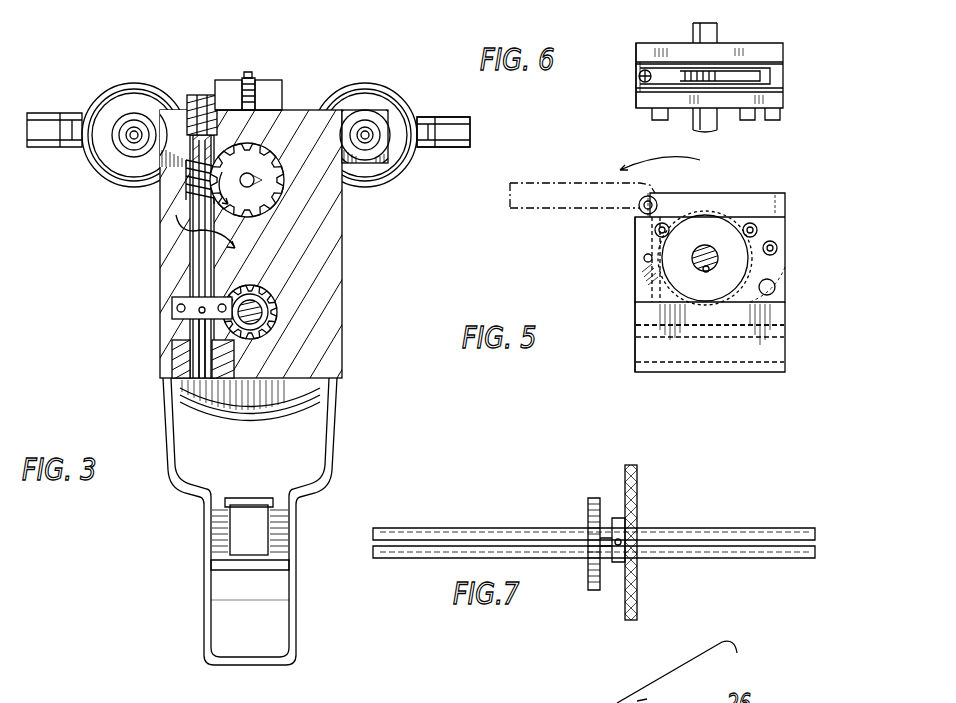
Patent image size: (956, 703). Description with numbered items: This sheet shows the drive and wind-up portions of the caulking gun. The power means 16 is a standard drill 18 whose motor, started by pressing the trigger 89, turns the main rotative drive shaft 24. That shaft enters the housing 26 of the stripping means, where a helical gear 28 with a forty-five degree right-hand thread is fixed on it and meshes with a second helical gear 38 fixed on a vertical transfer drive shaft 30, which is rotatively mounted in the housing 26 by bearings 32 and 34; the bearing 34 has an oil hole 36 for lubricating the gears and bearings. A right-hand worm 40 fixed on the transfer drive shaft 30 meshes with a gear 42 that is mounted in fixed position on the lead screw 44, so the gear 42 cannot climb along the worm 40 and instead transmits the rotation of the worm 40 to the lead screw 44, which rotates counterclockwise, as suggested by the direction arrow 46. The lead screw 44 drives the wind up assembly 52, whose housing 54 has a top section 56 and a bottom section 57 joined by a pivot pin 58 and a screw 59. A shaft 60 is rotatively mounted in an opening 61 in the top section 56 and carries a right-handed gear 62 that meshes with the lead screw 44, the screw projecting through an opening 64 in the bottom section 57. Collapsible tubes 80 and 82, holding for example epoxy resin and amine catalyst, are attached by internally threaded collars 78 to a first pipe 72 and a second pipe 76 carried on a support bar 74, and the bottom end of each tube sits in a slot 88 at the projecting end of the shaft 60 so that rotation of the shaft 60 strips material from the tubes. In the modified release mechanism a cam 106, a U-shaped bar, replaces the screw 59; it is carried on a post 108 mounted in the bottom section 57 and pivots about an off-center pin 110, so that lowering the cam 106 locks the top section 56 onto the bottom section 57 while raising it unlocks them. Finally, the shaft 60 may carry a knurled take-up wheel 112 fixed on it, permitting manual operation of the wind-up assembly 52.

In FIG. 3, the power means 16 is at (167, 563).
In FIG. 3, the drill 18 is at (338, 436).
In FIG. 3, the main rotative drive shaft 24 is at (265, 318).
In FIG. 3, the housing 26 is at (343, 231).
In FIG. 3, the helical gear 28 is at (270, 299).
In FIG. 3, the transfer drive shaft 30 is at (200, 333).
In FIG. 3, the bearing 32 is at (190, 361).
In FIG. 3, the bearing 34 is at (193, 104).
In FIG. 3, the oil hole 36 is at (198, 95).
In FIG. 3, the second helical gear 38 is at (172, 306).
In FIG. 3, the worm 40 is at (190, 187).
In FIG. 3, the gear 42 is at (269, 170).
In FIG. 3, the lead screw 44 is at (270, 194).
In FIG. 3, the direction arrow 46 is at (264, 207).
In FIG. 3, the wind up assembly 52 is at (285, 68).
In FIG. 3, the housing 54 is at (231, 72).
In FIG. 6, the housing 54 is at (623, 36).
In FIG. 5, the housing 54 is at (624, 304).
In FIG. 3, the top section 56 is at (272, 87).
In FIG. 6, the top section 56 is at (784, 103).
In FIG. 5, the top section 56 is at (783, 250).
In FIG. 5, the bottom section 57 is at (782, 363).
In FIG. 5, the pivot pin 58 is at (776, 289).
In FIG. 3, the screw 59 is at (258, 78).
In FIG. 3, the shaft 60 is at (456, 118).
In FIG. 6, the shaft 60 is at (717, 38).
In FIG. 5, the shaft 60 is at (696, 255).
In FIG. 7, the shaft 60 is at (686, 528).
In FIG. 5, the opening 61 is at (705, 273).
In FIG. 6, the gear 62 is at (780, 76).
In FIG. 5, the gear 62 is at (707, 214).
In FIG. 7, the gear 62 is at (592, 498).
In FIG. 5, the opening 64 is at (636, 326).
In FIG. 3, the first pipe 72 is at (373, 141).
In FIG. 3, the support bar 74 is at (395, 152).
In FIG. 3, the second pipe 76 is at (128, 148).
In FIG. 3, the collar 78 is at (138, 88).
In FIG. 3, the collapsible tube 80 is at (378, 85).
In FIG. 3, the collapsible tube 82 is at (124, 86).
In FIG. 3, the slot 88 is at (52, 141).
In FIG. 7, the slot 88 is at (496, 528).
In FIG. 3, the trigger 89 is at (244, 529).
In FIG. 6, the cam 106 is at (781, 66).
In FIG. 5, the cam 106 is at (568, 212).
In FIG. 6, the post 108 is at (638, 77).
In FIG. 5, the post 108 is at (648, 259).
In FIG. 6, the pin 110 is at (647, 62).
In FIG. 5, the pin 110 is at (635, 205).
In FIG. 7, the take-up wheel 112 is at (638, 492).